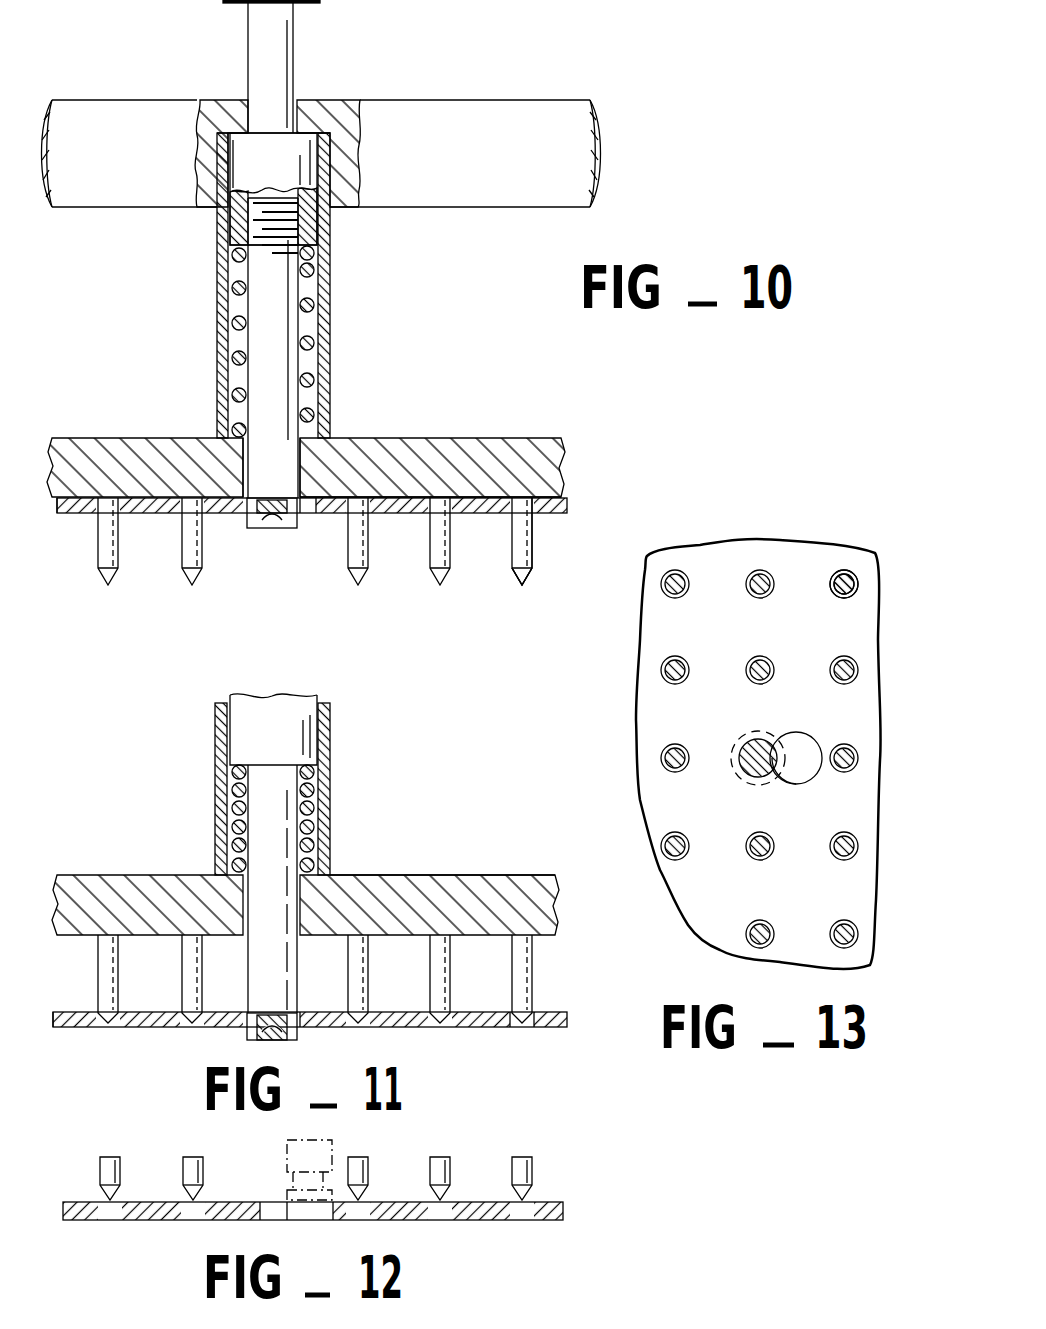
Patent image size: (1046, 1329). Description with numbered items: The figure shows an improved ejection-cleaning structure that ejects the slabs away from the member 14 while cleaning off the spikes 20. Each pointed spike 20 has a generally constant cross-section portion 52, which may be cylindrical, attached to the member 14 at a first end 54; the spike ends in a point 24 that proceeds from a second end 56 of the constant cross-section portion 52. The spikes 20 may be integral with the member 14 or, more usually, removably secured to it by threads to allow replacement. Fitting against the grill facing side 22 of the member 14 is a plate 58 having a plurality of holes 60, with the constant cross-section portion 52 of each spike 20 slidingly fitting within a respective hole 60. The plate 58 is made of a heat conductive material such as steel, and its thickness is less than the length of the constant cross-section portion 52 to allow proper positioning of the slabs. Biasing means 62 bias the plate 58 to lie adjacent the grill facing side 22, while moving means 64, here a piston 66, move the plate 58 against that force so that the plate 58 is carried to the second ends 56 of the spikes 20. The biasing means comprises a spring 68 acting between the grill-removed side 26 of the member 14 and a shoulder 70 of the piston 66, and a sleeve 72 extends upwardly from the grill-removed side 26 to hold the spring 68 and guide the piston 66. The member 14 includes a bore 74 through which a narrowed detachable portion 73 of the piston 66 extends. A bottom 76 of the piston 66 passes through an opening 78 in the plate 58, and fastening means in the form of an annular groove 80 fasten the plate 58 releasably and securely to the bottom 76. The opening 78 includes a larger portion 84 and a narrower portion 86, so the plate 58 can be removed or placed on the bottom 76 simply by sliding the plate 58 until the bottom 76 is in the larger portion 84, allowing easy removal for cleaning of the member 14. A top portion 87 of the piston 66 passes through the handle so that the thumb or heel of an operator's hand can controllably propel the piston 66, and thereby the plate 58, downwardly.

In FIG. 10, the member 14 is at (507, 437).
In FIG. 11, the member 14 is at (457, 875).
In FIG. 10, the spikes 20 is at (533, 565).
In FIG. 11, the spikes 20 is at (533, 973).
In FIG. 12, the spikes 20 is at (447, 1177).
In FIG. 13, the spikes 20 is at (845, 570).
In FIG. 10, the grill facing side 22 is at (77, 512).
In FIG. 11, the grill facing side 22 is at (88, 935).
In FIG. 10, the point 24 is at (522, 582).
In FIG. 10, the grill-removed side 26 is at (378, 437).
In FIG. 11, the grill-removed side 26 is at (360, 875).
In FIG. 10, the generally constant cross-section portion 52 is at (533, 540).
In FIG. 10, the first end 54 is at (557, 487).
In FIG. 10, the second end 56 is at (515, 570).
In FIG. 10, the plate 58 is at (483, 520).
In FIG. 11, the plate 58 is at (545, 1032).
In FIG. 12, the plate 58 is at (563, 1203).
In FIG. 13, the plate 58 is at (700, 644).
In FIG. 11, the holes 60 is at (513, 1023).
In FIG. 13, the holes 60 is at (759, 570).
In FIG. 10, the biasing means 62 is at (197, 312).
In FIG. 10, the moving means 64 is at (185, 252).
In FIG. 10, the piston 66 is at (257, 306).
In FIG. 10, the spring 68 is at (320, 306).
In FIG. 11, the spring 68 is at (230, 827).
In FIG. 10, the shoulder 70 is at (298, 253).
In FIG. 11, the shoulder 70 is at (317, 770).
In FIG. 10, the sleeve 72 is at (330, 220).
In FIG. 10, the narrowed detachable portion 73 is at (272, 363).
In FIG. 11, the narrowed detachable portion 73 is at (275, 828).
In FIG. 10, the bore 74 is at (250, 465).
In FIG. 10, the bottom 76 is at (278, 530).
In FIG. 11, the bottom 76 is at (287, 1040).
In FIG. 10, the opening 78 is at (315, 508).
In FIG. 11, the opening 78 is at (327, 1028).
In FIG. 12, the opening 78 is at (317, 1213).
In FIG. 13, the opening 78 is at (795, 785).
In FIG. 10, the annular groove 80 is at (270, 508).
In FIG. 11, the annular groove 80 is at (258, 1030).
In FIG. 13, the larger portion 84 is at (818, 765).
In FIG. 12, the narrower portion 86 is at (270, 1213).
In FIG. 13, the narrower portion 86 is at (773, 745).
In FIG. 10, the top portion 87 is at (293, 70).